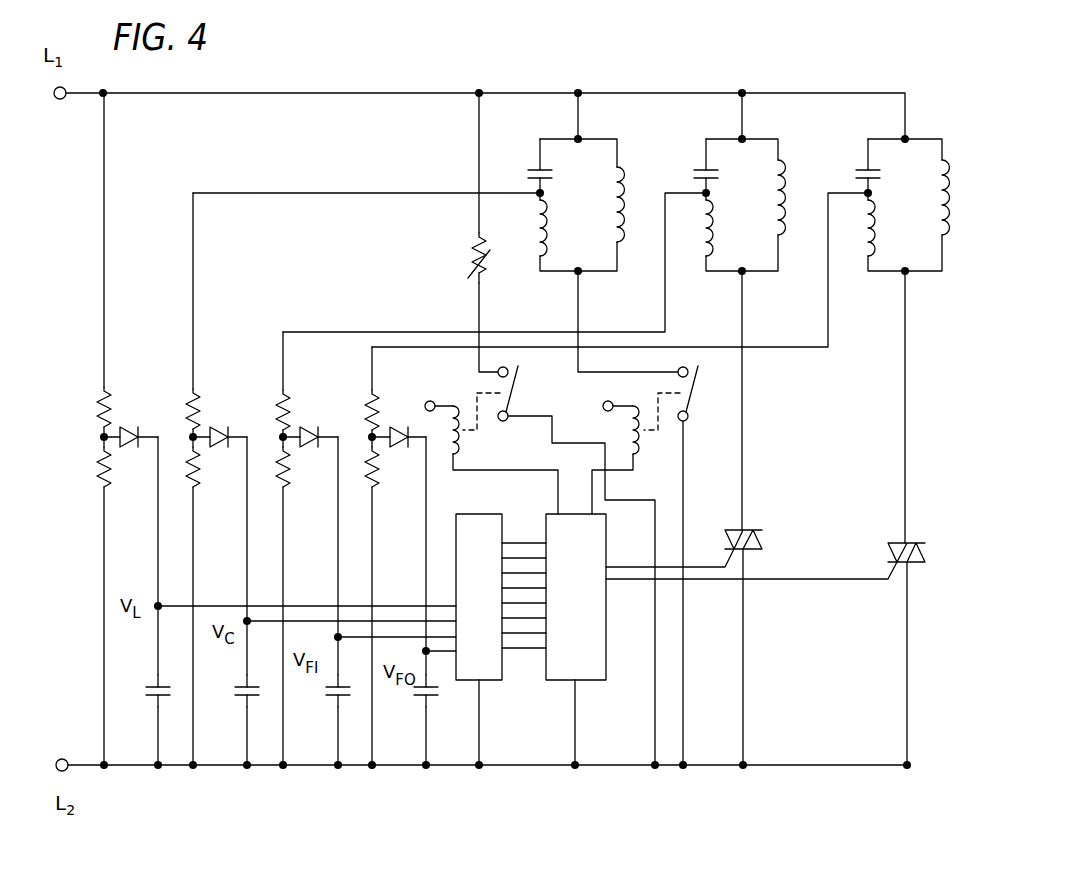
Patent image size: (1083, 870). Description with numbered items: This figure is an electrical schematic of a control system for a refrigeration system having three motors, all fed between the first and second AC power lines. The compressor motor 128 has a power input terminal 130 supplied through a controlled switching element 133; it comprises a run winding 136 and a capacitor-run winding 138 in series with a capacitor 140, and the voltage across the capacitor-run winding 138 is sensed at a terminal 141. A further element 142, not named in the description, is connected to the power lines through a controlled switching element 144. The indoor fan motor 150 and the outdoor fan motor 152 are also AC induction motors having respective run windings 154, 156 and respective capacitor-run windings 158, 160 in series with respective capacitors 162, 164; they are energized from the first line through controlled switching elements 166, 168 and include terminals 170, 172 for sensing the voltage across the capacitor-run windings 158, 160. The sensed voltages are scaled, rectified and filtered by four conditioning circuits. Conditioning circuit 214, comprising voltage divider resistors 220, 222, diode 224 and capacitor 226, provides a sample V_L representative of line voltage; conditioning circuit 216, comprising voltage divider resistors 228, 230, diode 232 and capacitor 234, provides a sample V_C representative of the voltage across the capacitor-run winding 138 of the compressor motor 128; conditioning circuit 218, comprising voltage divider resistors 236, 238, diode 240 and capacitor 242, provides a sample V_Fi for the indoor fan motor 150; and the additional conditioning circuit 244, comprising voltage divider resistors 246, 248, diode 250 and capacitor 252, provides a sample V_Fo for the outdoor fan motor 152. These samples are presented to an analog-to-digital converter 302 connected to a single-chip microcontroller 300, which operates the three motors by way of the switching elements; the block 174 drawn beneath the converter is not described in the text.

The AC induction motor 128 is at (579, 188).
The power input terminal 130 is at (581, 138).
The controlled switching element 133 is at (655, 444).
The run winding 136 is at (620, 172).
The capacitor-run winding 138 is at (553, 241).
The capacitor 140 is at (535, 170).
The terminal 141 is at (553, 193).
The resistor 142 is at (470, 264).
The controlled switching element 144 is at (493, 428).
The indoor fan motor 150 is at (737, 201).
The outdoor fan motor 152 is at (882, 215).
The run winding 154 is at (790, 240).
The run winding 156 is at (952, 245).
The capacitor-run winding 158 is at (712, 245).
The capacitor-run winding 160 is at (870, 245).
The capacitor 162 is at (712, 197).
The capacitor 164 is at (874, 197).
The controlled switching element 166 is at (758, 543).
The controlled switching element 168 is at (893, 546).
The terminal 170 is at (706, 190).
The terminal 172 is at (866, 191).
The control circuit 174 is at (551, 623).
The conditioning circuit 214 is at (106, 429).
The conditioning circuit 216 is at (195, 479).
The conditioning circuit 218 is at (279, 548).
The voltage divider resistor 220 is at (100, 410).
The voltage divider resistor 222 is at (100, 465).
The diode 224 is at (125, 427).
The capacitor 226 is at (147, 697).
The voltage divider resistor 228 is at (192, 393).
The voltage divider resistor 230 is at (200, 465).
The diode 232 is at (218, 430).
The capacitor 234 is at (237, 697).
The voltage divider resistor 236 is at (283, 390).
The voltage divider resistor 238 is at (287, 465).
The diode 240 is at (305, 428).
The capacitor 242 is at (330, 697).
The conditioning circuit 244 is at (370, 554).
The voltage divider resistor 246 is at (372, 390).
The voltage divider resistor 248 is at (376, 480).
The diode 250 is at (399, 448).
The capacitor 252 is at (415, 697).
The single-chip microcontroller 300 is at (608, 562).
The analog-to-digital converter 302 is at (504, 530).